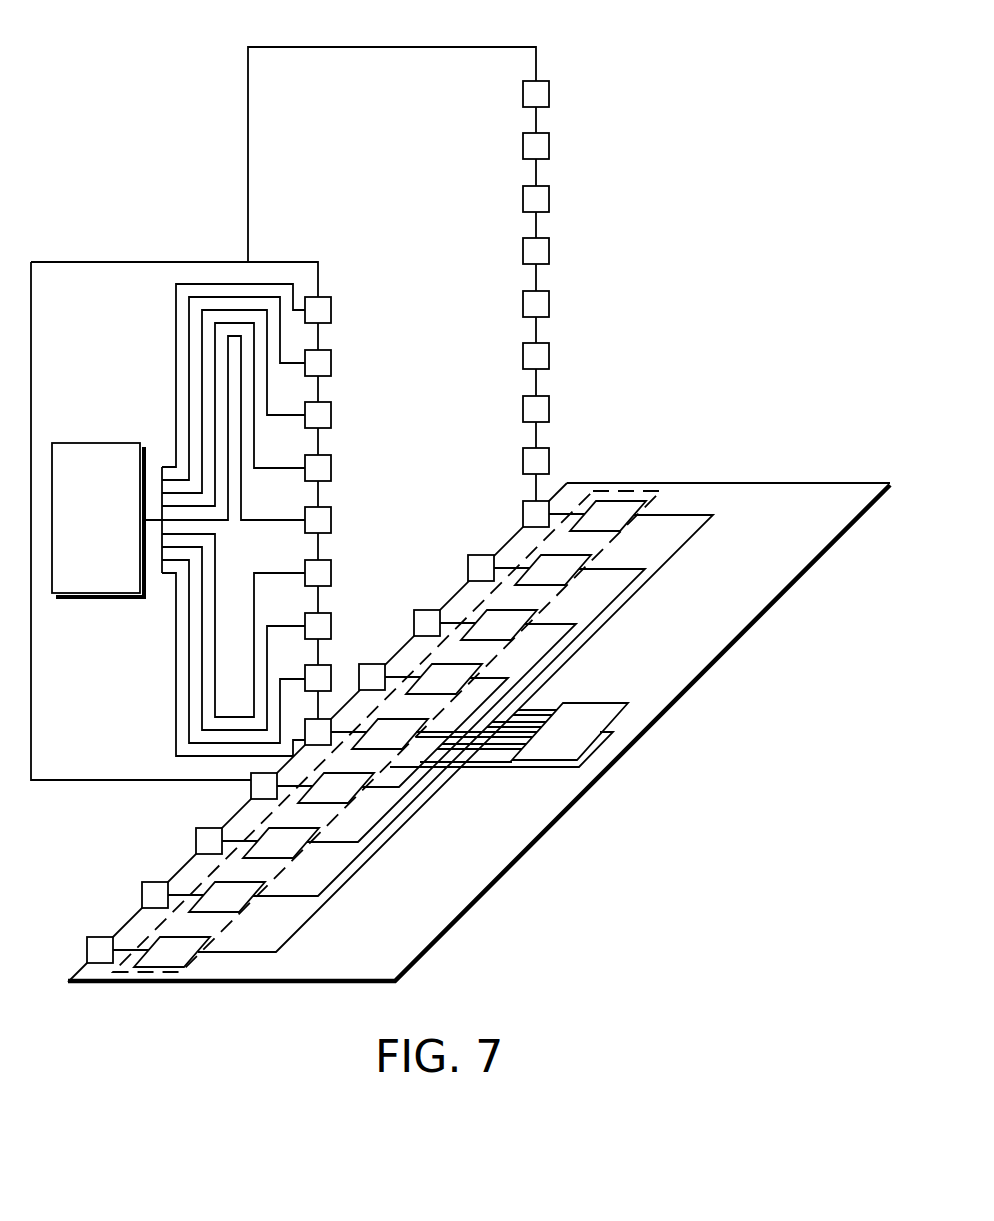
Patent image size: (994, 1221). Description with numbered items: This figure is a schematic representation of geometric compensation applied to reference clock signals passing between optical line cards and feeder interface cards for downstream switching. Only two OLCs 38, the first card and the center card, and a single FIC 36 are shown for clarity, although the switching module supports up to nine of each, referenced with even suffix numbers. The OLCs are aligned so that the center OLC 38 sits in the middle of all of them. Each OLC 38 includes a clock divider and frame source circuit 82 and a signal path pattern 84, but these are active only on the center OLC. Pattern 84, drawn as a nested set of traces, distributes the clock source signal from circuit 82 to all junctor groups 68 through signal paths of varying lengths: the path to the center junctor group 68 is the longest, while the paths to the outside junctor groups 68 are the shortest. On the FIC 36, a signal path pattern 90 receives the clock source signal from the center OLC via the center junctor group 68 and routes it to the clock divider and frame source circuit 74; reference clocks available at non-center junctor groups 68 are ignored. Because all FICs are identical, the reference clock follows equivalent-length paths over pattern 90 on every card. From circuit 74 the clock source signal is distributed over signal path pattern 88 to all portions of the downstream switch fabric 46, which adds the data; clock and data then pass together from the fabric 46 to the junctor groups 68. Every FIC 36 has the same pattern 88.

The feeder interface card 36 is at (735, 483).
The optical line card 38 is at (430, 47).
The downstream switch fabric 46 is at (640, 491).
The junctor group 68 is at (322, 297).
The clock divider and frame source circuit 74 is at (600, 703).
The clock divider and frame source circuit 82 is at (107, 443).
The signal path pattern 84 is at (127, 366).
The signal path pattern 88 is at (382, 866).
The signal path pattern 90 is at (477, 768).